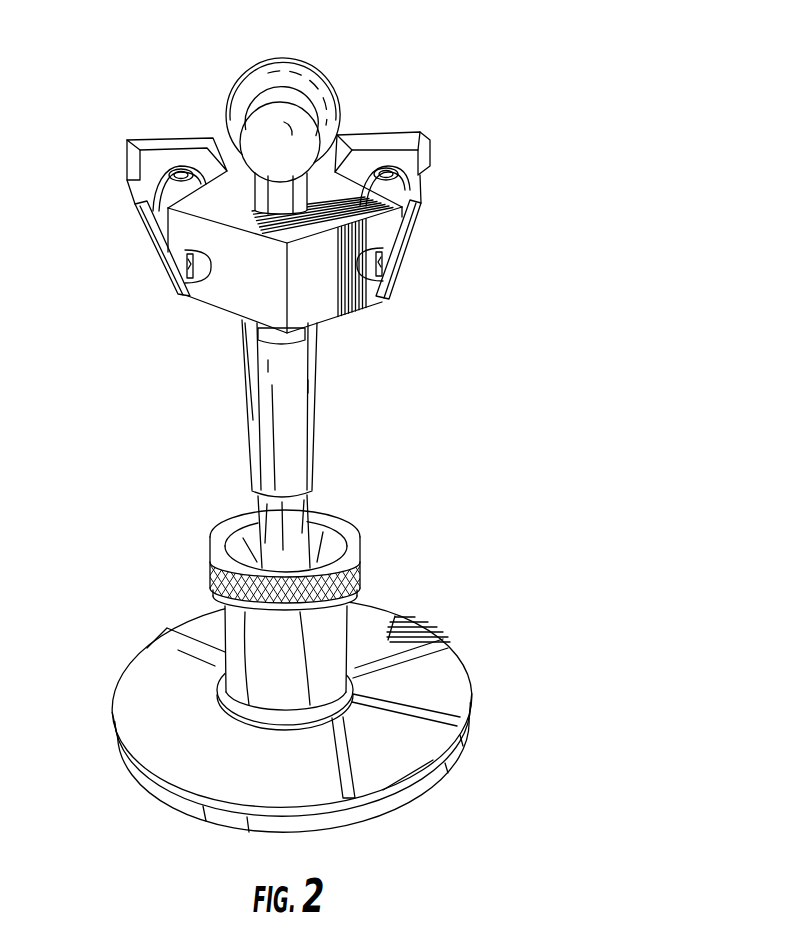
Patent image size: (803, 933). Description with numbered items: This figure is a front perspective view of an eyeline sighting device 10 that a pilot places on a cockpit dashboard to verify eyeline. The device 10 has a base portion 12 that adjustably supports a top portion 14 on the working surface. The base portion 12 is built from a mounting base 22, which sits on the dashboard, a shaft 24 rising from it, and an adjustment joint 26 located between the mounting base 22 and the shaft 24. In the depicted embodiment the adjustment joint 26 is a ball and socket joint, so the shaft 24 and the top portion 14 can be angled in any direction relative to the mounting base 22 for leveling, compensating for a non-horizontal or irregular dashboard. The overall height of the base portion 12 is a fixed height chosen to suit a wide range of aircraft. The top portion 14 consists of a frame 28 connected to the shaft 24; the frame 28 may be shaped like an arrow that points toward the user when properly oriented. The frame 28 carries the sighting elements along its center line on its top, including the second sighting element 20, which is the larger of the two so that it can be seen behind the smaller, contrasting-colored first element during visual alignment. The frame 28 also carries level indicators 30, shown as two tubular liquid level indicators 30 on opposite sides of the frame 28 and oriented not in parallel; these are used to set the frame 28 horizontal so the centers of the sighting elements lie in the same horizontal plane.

The eyeline sighting device 10 is at (577, 70).
The base portion 12 is at (488, 623).
The top portion 14 is at (483, 168).
The second sighting element 20 is at (251, 128).
The mounting base 22 is at (293, 65).
The shaft 24 is at (312, 440).
The adjustment joint 26 is at (357, 558).
The frame 28 is at (347, 310).
The level indicator 30 is at (160, 208).